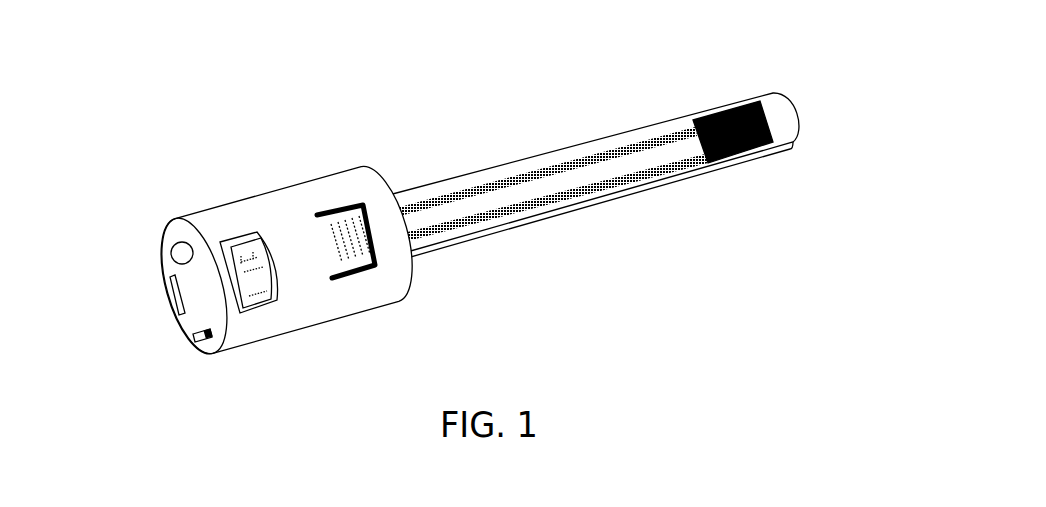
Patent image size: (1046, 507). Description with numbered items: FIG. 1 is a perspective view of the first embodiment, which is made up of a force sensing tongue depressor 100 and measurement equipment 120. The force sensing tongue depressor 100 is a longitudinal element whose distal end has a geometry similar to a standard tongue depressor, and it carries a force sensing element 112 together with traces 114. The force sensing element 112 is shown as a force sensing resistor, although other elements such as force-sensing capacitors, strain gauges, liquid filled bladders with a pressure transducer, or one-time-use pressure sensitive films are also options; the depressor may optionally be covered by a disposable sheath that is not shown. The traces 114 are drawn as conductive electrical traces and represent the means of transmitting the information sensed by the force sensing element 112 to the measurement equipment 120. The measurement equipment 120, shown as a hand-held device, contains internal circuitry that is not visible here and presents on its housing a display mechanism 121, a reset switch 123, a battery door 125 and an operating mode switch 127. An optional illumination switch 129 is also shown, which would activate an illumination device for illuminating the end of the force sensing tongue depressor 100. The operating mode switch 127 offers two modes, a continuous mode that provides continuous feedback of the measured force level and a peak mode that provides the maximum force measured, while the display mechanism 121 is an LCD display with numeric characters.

The force sensing tongue depressor 100 is at (434, 199).
The force sensing element 112 is at (697, 117).
The traces 114 is at (592, 151).
The measurement equipment 120 is at (273, 245).
The display mechanism 121 is at (232, 242).
The reset switch 123 is at (172, 248).
The battery door 125 is at (173, 302).
The operating mode switch 127 is at (203, 338).
The illumination switch 129 is at (357, 263).